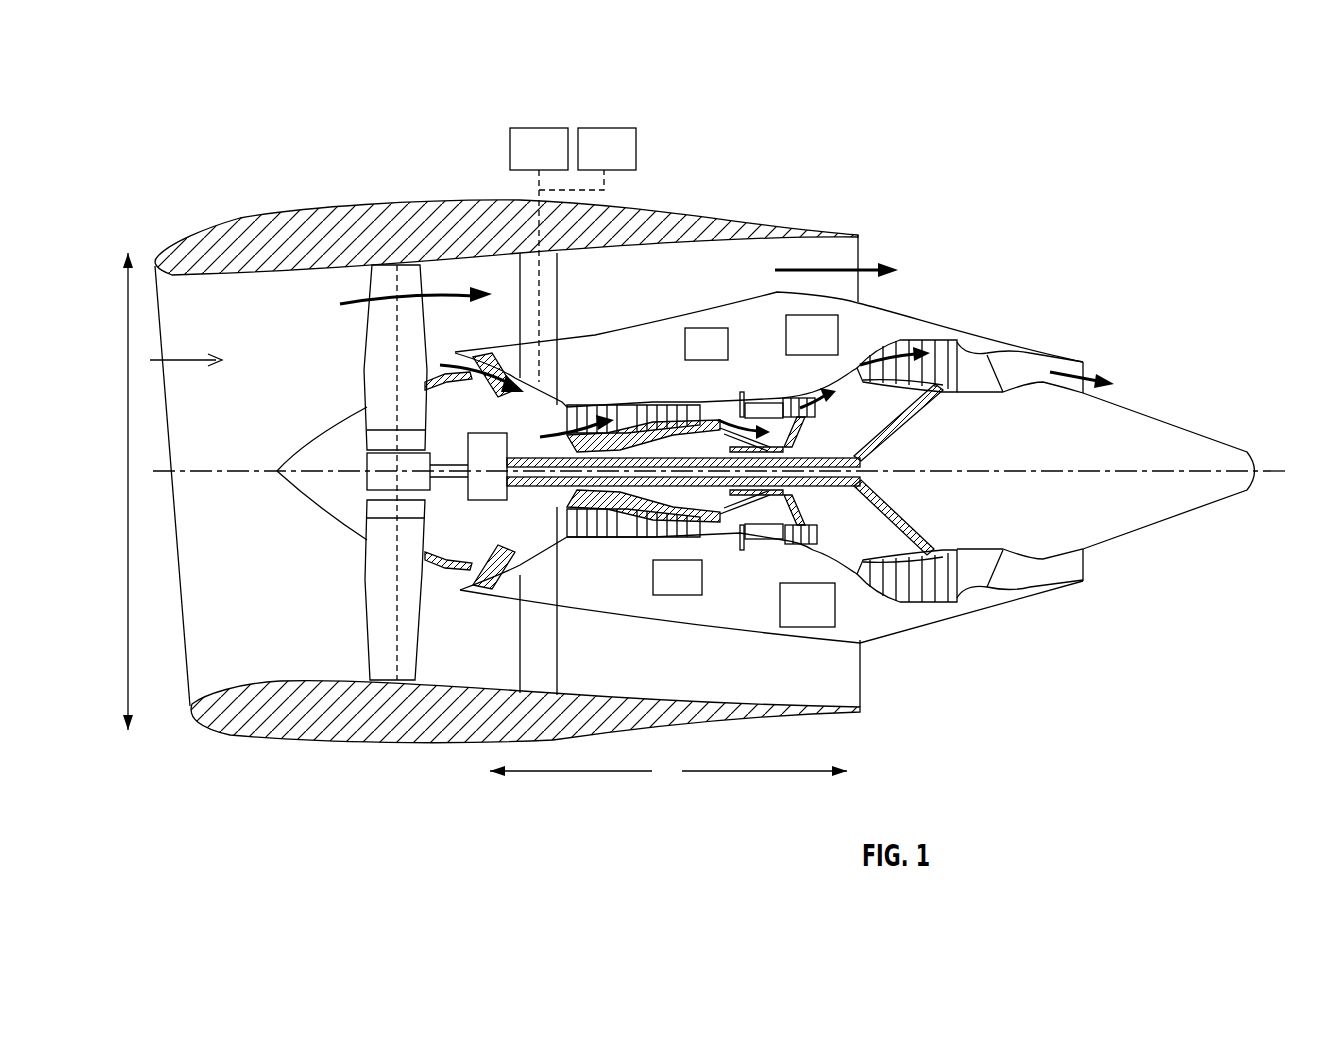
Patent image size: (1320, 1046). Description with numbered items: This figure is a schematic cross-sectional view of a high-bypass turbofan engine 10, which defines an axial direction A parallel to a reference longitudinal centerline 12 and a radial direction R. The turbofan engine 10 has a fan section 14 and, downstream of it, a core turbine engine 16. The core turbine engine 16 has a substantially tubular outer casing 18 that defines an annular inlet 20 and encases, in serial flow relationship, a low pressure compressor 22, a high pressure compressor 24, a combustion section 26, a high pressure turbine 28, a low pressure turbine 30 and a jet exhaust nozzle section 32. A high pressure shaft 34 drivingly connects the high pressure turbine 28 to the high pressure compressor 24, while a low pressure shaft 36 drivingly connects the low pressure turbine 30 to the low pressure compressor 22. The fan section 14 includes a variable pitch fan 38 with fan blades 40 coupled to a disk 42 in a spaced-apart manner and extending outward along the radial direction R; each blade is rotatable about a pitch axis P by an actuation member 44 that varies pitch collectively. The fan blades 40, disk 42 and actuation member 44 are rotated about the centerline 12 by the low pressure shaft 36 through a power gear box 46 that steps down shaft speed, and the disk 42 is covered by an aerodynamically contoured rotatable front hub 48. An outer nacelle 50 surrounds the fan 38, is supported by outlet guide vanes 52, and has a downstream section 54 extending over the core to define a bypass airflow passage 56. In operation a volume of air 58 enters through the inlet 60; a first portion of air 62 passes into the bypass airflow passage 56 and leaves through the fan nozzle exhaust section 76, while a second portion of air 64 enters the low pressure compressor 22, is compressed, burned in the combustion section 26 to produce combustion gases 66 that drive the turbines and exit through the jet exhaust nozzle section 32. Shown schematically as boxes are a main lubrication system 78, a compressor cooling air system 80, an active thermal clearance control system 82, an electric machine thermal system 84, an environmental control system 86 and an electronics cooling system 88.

The turbofan engine 10 is at (1003, 199).
The longitudinal centerline 12 is at (1053, 470).
The fan section 14 is at (283, 266).
The core turbine engine 16 is at (658, 348).
The outer casing 18 is at (702, 635).
The annular inlet 20 is at (458, 586).
The low pressure compressor 22 is at (512, 552).
The high pressure compressor 24 is at (586, 546).
The combustion section 26 is at (762, 549).
The high pressure turbine 28 is at (810, 542).
The low pressure turbine 30 is at (941, 600).
The jet exhaust nozzle section 32 is at (1009, 585).
The high pressure shaft 34 is at (790, 430).
The low pressure shaft 36 is at (887, 438).
The variable pitch fan 38 is at (316, 520).
The fan blades 40 is at (365, 608).
The disk 42 is at (380, 437).
The actuation member 44 is at (367, 477).
The power gear box 46 is at (495, 445).
The front hub 48 is at (293, 492).
The outer nacelle 50 is at (375, 745).
The outlet guide vanes 52 is at (557, 300).
The downstream section of nacelle 54 is at (745, 215).
The bypass airflow passage 56 is at (653, 280).
The volume of air 58 is at (195, 358).
The inlet 60 is at (190, 705).
The first portion of air 62 is at (378, 298).
The second portion of air 64 is at (450, 363).
The combustion gases 66 is at (800, 392).
The fan nozzle exhaust section 76 is at (852, 258).
The main lubrication system 78 is at (835, 612).
The compressor cooling air system 80 is at (700, 595).
The active thermal clearance control system 82 is at (795, 315).
The electric machine thermal system 84 is at (712, 328).
The environmental control system 86 is at (547, 128).
The electronics cooling system 88 is at (621, 128).
The pitch axis P is at (400, 285).
The radial direction R is at (126, 491).
The axial direction A is at (668, 771).